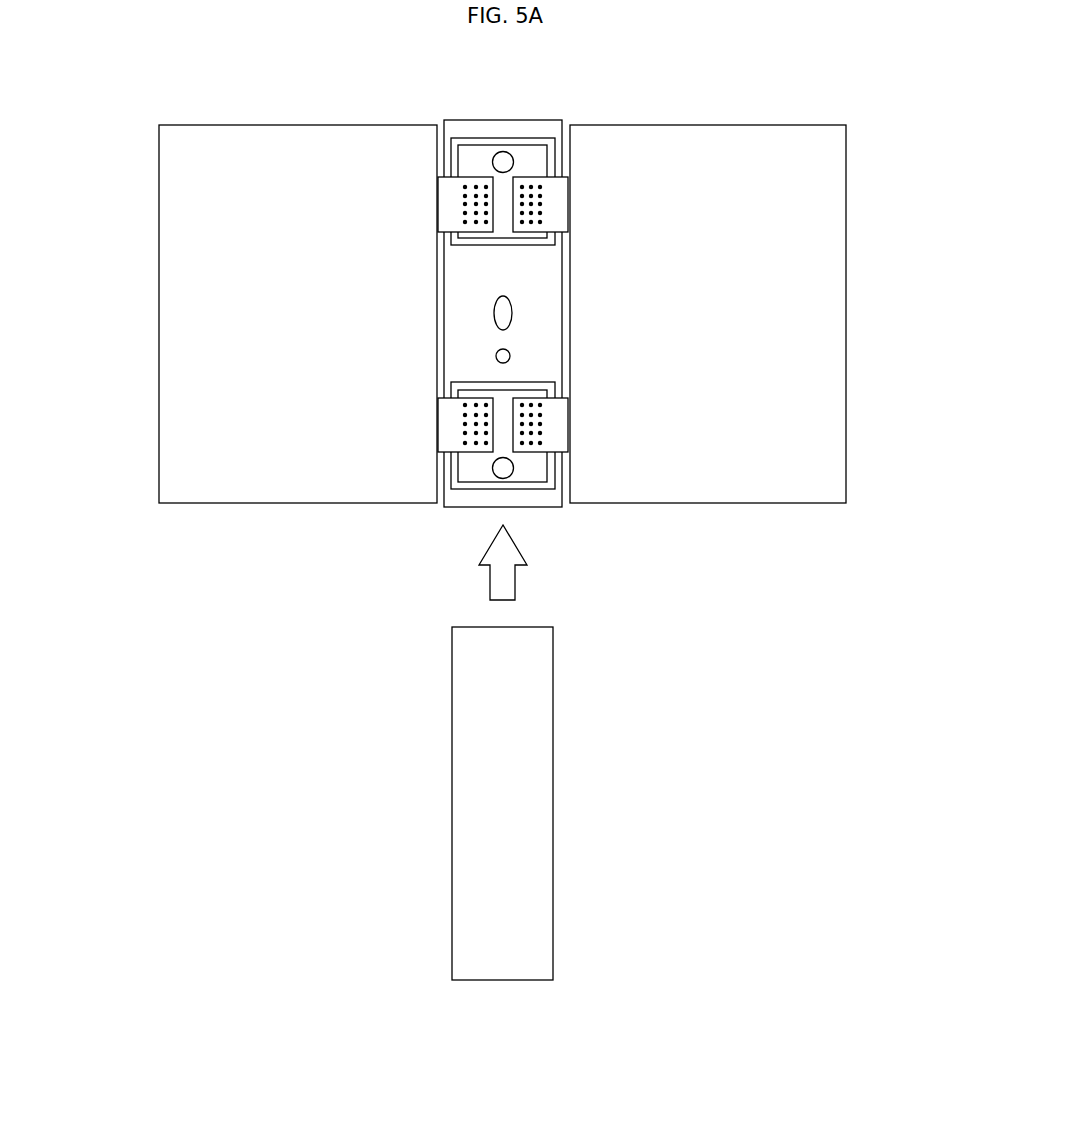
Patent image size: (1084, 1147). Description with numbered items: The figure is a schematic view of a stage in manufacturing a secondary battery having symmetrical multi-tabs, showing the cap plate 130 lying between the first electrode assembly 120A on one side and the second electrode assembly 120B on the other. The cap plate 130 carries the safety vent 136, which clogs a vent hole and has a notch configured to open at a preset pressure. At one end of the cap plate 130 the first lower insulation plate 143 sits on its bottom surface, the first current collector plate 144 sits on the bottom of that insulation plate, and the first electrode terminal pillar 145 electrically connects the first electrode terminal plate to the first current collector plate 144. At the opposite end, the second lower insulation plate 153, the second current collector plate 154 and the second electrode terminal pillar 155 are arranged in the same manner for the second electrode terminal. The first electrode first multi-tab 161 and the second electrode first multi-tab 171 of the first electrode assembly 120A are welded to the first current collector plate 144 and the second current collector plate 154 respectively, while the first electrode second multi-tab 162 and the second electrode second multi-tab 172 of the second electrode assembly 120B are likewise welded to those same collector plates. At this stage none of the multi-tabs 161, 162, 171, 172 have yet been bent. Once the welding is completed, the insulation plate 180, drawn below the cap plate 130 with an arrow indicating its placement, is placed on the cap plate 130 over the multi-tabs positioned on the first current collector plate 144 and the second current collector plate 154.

The first electrode assembly 120A is at (150, 343).
The second electrode assembly 120B is at (858, 343).
The cap plate 130 is at (548, 268).
The safety vent 136 is at (510, 313).
The first lower insulation plate 143 is at (468, 138).
The first current collector plate 144 is at (537, 157).
The first electrode terminal pillar 145 is at (501, 152).
The second lower insulation plate 153 is at (476, 493).
The second current collector plate 154 is at (537, 468).
The second electrode terminal pillar 155 is at (505, 479).
The first electrode first multi-tab 161 is at (447, 205).
The first electrode second multi-tab 162 is at (562, 203).
The second electrode first multi-tab 171 is at (447, 427).
The second electrode second multi-tab 172 is at (562, 425).
The insulation plate 180 is at (485, 798).